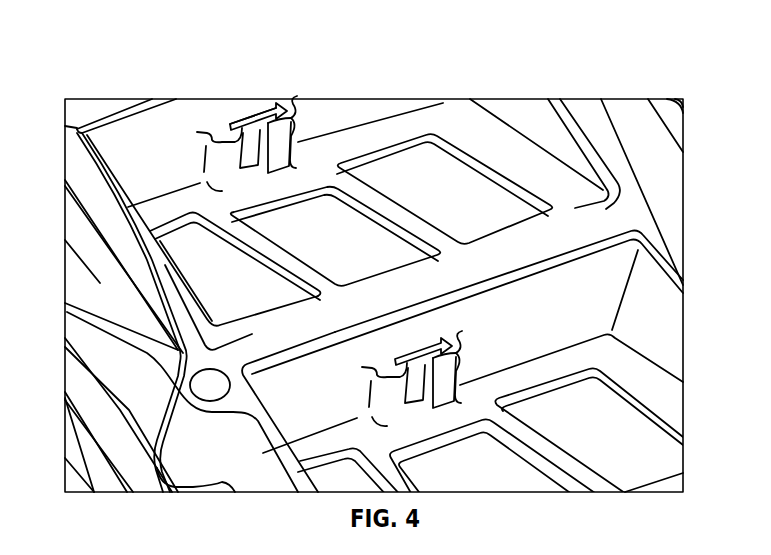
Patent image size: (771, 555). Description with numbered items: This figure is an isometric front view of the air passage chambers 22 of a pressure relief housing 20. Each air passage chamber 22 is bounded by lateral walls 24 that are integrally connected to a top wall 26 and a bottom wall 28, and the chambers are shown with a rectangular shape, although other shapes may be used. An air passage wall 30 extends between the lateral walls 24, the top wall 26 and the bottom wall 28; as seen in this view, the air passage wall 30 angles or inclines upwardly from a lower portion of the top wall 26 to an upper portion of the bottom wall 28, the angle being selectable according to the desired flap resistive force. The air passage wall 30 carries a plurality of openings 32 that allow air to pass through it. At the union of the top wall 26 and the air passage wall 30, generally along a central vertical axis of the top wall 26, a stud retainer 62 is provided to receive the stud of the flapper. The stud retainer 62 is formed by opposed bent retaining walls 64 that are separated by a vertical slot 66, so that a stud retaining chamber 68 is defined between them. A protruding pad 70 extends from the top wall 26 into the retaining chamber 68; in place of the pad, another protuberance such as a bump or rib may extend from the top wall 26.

The pressure relief housing 20 is at (528, 47).
The air passage chambers 22 is at (102, 148).
The lateral walls 24 is at (97, 257).
The top wall 26 is at (148, 103).
The bottom wall 28 is at (557, 240).
The air passage wall 30 is at (417, 122).
The openings 32 is at (326, 213).
The stud retainer 62 is at (291, 115).
The bent retaining walls 64 is at (197, 148).
The vertical slot 66 is at (257, 146).
The stud retaining chamber 68 is at (240, 135).
The protruding pad 70 is at (257, 117).